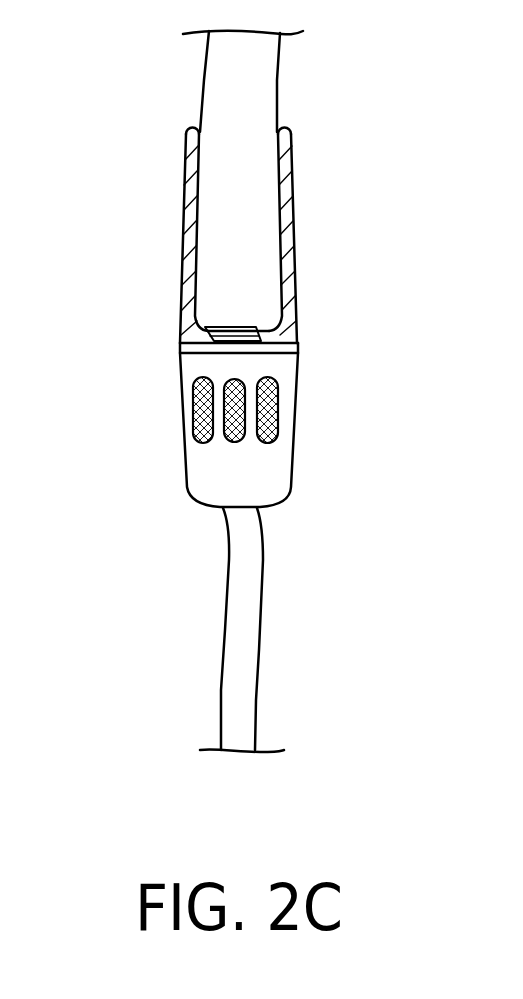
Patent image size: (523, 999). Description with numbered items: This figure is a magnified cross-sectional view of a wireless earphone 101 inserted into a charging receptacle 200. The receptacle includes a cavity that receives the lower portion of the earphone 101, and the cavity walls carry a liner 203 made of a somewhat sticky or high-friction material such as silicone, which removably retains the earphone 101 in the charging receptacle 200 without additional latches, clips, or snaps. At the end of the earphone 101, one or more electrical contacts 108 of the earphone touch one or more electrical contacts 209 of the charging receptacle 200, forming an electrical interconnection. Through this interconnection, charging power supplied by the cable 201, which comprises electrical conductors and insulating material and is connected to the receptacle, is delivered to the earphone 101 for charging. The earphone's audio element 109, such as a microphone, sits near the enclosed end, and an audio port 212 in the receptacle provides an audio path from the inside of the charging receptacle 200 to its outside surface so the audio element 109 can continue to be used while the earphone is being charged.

The wireless earphone 101 is at (214, 118).
The liner 203 is at (180, 270).
The charging receptacle 200 is at (168, 236).
The electrical contacts 108 is at (203, 333).
The audio element 109 is at (186, 347).
The electrical contacts 209 is at (186, 355).
The audio port 212 is at (197, 428).
The cable 201 is at (239, 545).